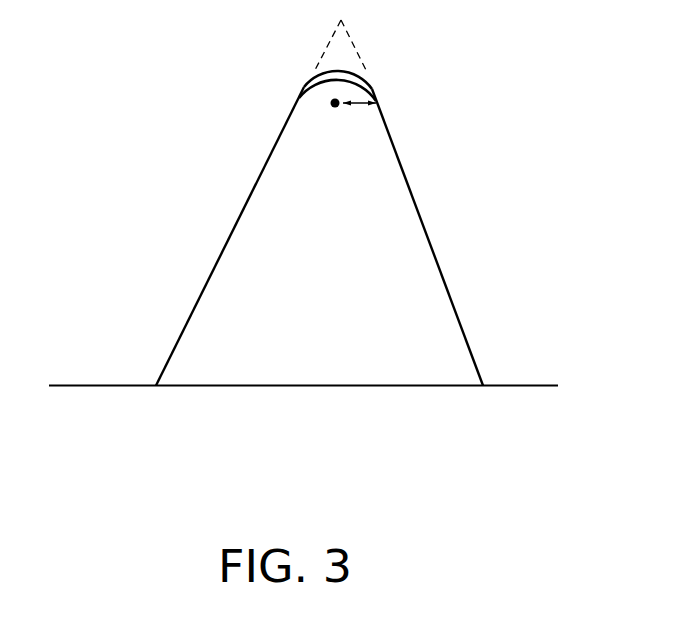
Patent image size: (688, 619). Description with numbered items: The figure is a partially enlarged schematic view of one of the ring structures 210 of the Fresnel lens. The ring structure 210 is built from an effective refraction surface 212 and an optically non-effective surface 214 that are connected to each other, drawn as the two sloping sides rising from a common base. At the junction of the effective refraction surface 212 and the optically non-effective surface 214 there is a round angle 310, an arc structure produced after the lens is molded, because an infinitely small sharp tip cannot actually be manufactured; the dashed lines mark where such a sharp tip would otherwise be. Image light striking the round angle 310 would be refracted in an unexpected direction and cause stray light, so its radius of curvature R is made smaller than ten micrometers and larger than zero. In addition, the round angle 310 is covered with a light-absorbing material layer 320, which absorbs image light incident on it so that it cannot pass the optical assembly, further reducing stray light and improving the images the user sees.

The ring structure 210 is at (388, 371).
The effective refraction surface 212 is at (214, 248).
The optically non-effective surface 214 is at (440, 239).
The round angle 310 is at (322, 72).
The light-absorbing material layer 320 is at (351, 81).